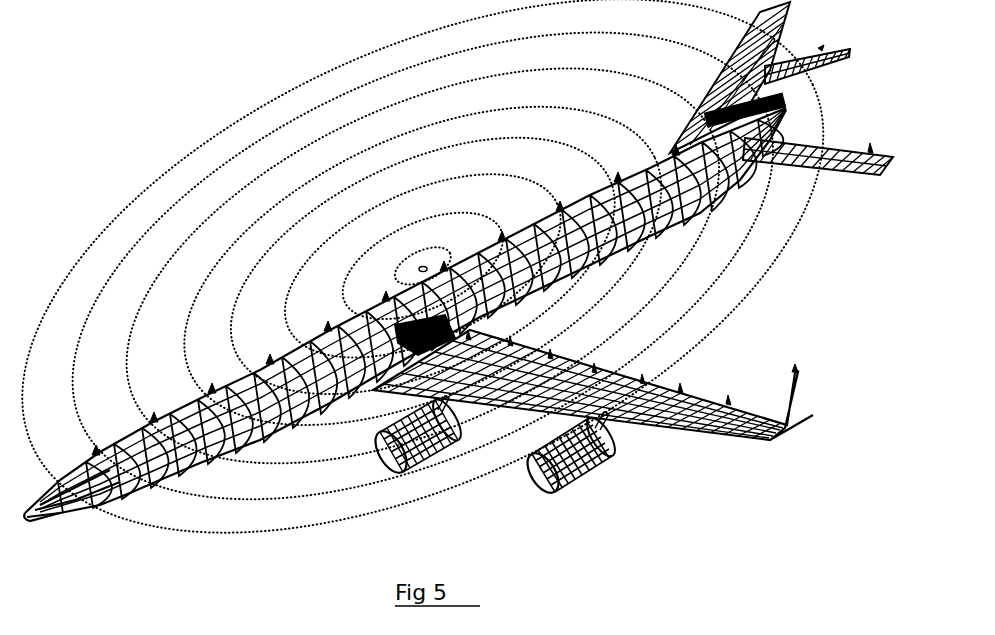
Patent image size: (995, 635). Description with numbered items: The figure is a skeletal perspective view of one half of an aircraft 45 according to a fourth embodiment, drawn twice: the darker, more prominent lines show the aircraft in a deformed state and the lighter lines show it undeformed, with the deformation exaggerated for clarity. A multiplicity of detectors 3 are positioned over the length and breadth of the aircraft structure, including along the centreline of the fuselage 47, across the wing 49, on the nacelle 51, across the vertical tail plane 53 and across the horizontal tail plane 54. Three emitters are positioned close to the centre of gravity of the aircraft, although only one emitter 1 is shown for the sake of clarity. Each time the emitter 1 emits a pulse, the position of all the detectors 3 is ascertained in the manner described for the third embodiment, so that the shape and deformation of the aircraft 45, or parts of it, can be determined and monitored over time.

The emitter 1 is at (419, 264).
The detectors 3 is at (457, 195).
The aircraft 45 is at (194, 462).
The fuselage 47 is at (240, 363).
The wing 49 is at (660, 413).
The nacelle 51 is at (583, 467).
The vertical tail plane 53 is at (743, 47).
The horizontal tail plane 54 is at (855, 172).